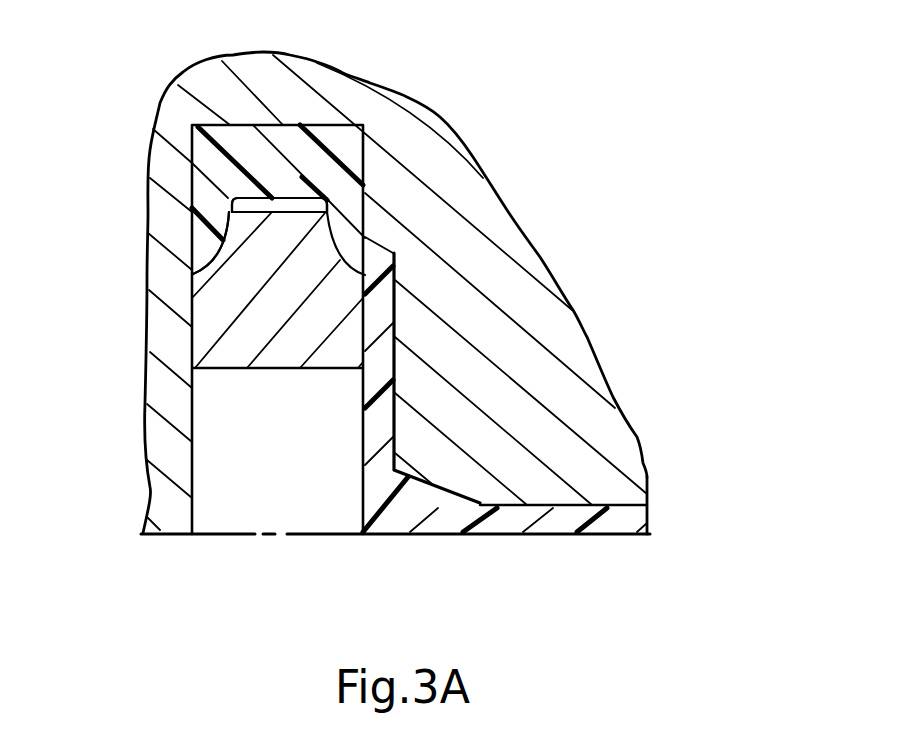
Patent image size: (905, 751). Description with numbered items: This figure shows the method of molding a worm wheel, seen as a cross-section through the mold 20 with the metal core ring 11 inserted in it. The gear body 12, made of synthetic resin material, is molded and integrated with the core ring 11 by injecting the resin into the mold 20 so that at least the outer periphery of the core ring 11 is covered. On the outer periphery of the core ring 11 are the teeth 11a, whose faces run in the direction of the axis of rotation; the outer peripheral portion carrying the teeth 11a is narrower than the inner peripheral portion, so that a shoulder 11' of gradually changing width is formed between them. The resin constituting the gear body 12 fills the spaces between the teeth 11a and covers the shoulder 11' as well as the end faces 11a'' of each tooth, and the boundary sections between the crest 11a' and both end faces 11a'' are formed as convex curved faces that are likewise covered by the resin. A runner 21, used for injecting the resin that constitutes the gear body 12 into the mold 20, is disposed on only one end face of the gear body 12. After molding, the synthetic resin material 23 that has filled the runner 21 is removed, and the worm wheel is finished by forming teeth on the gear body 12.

The mold 20 is at (445, 178).
The gear body 12 is at (210, 160).
The core ring 11 is at (200, 290).
The teeth 11a is at (307, 110).
The crest 11a' is at (396, 129).
The end faces 11a'' is at (329, 218).
The shoulder 11' is at (341, 372).
The runner 21 is at (513, 506).
The synthetic resin material 23 is at (438, 507).